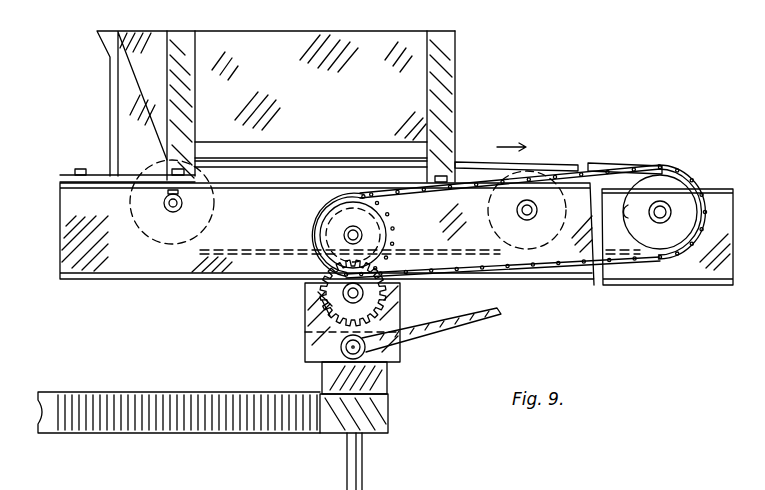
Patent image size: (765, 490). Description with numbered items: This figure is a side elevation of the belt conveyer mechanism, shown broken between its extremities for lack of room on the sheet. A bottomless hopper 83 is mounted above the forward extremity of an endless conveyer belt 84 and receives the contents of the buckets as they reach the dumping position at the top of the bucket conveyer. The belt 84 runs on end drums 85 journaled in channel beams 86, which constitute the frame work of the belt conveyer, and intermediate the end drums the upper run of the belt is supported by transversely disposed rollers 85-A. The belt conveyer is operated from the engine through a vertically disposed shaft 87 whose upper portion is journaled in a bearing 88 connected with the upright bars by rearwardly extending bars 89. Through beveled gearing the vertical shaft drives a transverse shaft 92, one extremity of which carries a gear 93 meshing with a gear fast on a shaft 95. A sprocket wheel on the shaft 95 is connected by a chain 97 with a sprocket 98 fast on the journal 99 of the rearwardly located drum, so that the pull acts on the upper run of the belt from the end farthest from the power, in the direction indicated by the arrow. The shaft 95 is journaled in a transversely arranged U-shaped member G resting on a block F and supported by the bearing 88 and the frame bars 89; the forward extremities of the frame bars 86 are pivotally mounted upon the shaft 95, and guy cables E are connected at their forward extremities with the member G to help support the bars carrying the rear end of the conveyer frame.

The bottomless hopper 83 is at (276, 106).
The endless conveyer belt 84 is at (537, 163).
The end drum 85 is at (153, 173).
The transversely disposed roller 85-A is at (537, 180).
The channel beam 86 is at (396, 227).
The vertically disposed shaft 87 is at (362, 458).
The bearing 88 is at (388, 412).
The rearwardly extending bar 89 is at (139, 396).
The transverse shaft 92 is at (343, 292).
The gear 93 is at (312, 312).
The shaft 95 is at (344, 234).
The chain 97 is at (535, 270).
The sprocket 98 is at (657, 173).
The journal 99 is at (664, 208).
The U-shaped member G is at (312, 311).
The guy rope or cable E is at (450, 320).
The block F is at (389, 379).